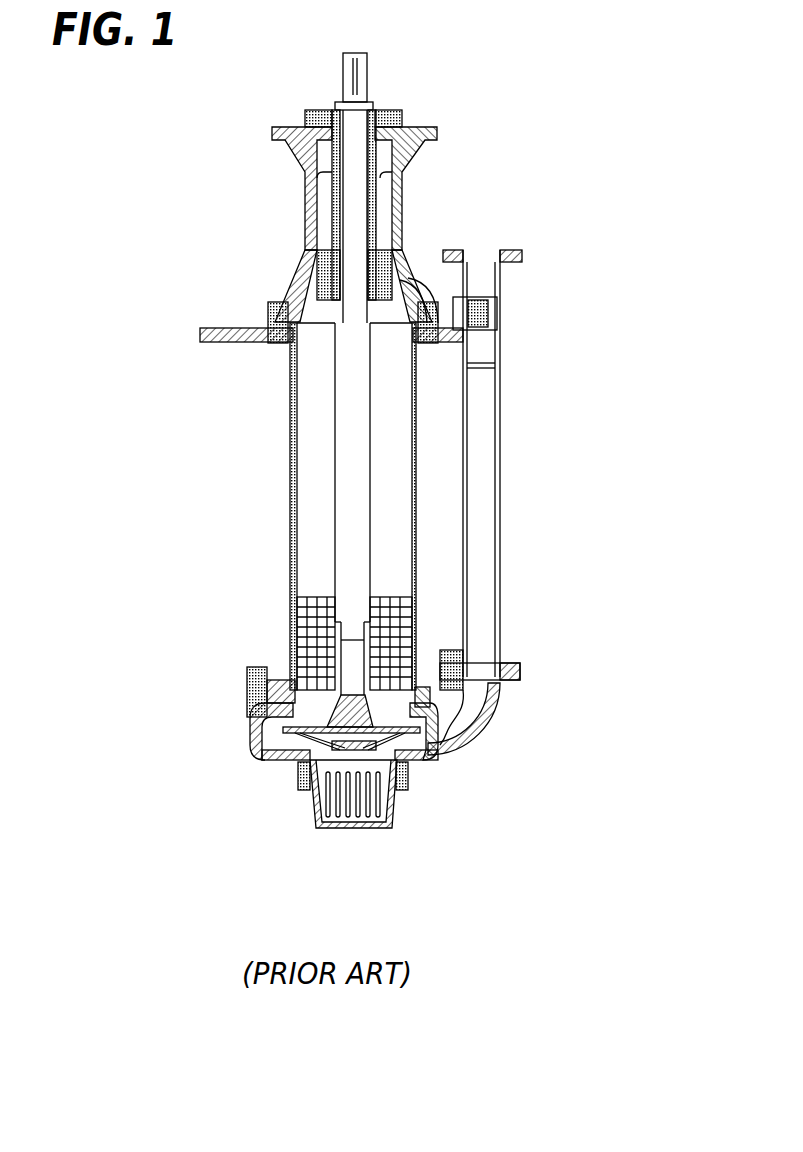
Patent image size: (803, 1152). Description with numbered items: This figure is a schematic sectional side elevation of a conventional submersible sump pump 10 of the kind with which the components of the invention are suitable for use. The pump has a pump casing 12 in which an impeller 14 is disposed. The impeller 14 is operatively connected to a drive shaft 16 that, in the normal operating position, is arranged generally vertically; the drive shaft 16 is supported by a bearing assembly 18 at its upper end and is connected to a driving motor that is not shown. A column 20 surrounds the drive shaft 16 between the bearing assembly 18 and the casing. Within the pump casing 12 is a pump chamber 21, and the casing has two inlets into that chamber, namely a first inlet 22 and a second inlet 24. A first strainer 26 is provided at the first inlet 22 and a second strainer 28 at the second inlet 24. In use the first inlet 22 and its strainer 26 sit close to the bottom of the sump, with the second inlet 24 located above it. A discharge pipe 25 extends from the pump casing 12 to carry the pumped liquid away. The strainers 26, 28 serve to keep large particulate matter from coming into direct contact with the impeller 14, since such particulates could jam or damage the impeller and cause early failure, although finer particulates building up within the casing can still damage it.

The sump pump 10 is at (515, 322).
The pump casing 12 is at (266, 742).
The impeller 14 is at (300, 744).
The drive shaft 16 is at (327, 458).
The bearing assembly 18 is at (408, 205).
The column 20 is at (288, 392).
The pump chamber 21 is at (423, 753).
The first inlet 22 is at (342, 743).
The second inlet 24 is at (460, 655).
The discharge pipe 25 is at (500, 465).
The first strainer 26 is at (385, 828).
The second strainer 28 is at (412, 636).